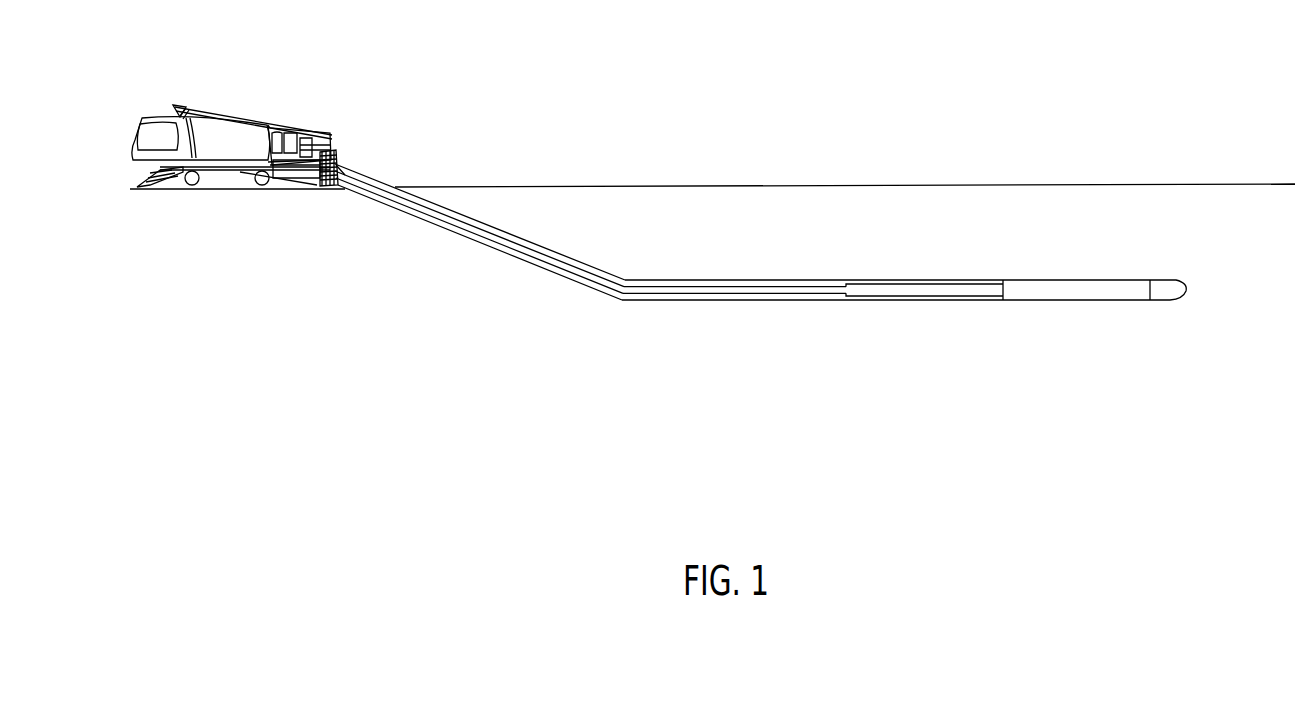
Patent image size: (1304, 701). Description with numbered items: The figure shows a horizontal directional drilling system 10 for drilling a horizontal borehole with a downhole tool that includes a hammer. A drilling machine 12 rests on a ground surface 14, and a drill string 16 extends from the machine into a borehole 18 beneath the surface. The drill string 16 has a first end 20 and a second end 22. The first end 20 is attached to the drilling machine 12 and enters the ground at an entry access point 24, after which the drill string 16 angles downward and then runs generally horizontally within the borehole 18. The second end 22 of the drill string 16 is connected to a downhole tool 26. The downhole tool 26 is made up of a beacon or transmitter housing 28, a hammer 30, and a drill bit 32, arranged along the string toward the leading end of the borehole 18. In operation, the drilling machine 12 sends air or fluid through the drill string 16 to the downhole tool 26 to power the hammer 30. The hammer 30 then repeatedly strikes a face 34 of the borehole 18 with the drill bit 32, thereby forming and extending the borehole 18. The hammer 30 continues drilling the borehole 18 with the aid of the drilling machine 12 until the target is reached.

The horizontal directional drilling system 10 is at (460, 61).
The drilling machine 12 is at (220, 125).
The ground surface 14 is at (968, 185).
The drill string 16 is at (548, 265).
The borehole 18 is at (703, 301).
The first end 20 is at (372, 179).
The second end 22 is at (845, 296).
The entry access point 24 is at (350, 189).
The downhole tool 26 is at (1003, 302).
The beacon or transmitter housing 28 is at (897, 287).
The hammer 30 is at (1060, 280).
The drill bit 32 is at (1167, 284).
The face 34 is at (1188, 286).